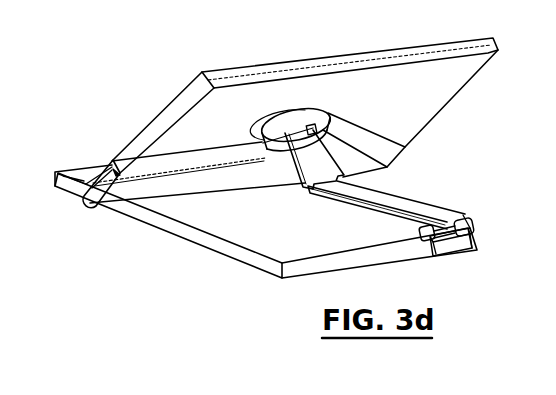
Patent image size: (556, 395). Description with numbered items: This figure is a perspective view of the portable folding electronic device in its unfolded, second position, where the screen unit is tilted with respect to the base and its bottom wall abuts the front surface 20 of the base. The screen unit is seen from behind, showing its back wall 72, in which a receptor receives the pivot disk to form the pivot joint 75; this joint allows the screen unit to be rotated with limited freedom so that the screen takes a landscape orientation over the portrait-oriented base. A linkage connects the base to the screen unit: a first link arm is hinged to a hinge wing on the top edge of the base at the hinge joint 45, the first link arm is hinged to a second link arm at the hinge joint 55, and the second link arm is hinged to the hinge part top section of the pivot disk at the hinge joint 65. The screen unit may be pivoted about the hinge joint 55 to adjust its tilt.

The front surface 20 is at (190, 208).
The back wall 72 is at (418, 118).
The pivot joint 75 is at (334, 102).
The hinge joint 65 is at (303, 140).
The hinge joint 55 is at (307, 197).
The hinge joint 45 is at (487, 222).